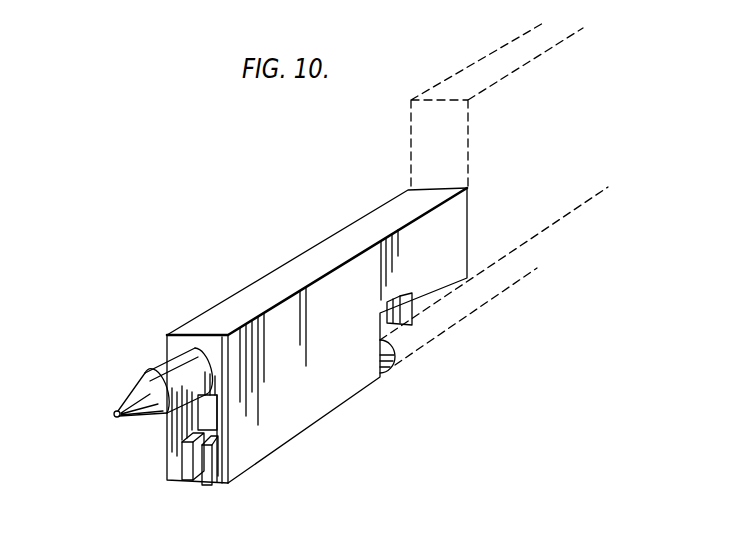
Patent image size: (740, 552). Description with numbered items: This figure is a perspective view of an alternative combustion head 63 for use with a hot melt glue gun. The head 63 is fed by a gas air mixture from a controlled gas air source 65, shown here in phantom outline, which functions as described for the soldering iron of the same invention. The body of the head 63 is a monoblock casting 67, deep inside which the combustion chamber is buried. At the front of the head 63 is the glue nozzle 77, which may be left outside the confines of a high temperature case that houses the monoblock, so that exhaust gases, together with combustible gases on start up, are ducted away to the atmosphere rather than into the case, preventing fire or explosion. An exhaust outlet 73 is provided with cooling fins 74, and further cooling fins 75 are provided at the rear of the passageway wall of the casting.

The head 63 is at (304, 247).
The controlled gas air source 65 is at (502, 291).
The monoblock casting 67 is at (335, 393).
The exhaust outlet 73 is at (207, 408).
The cooling fins 74 is at (204, 475).
The cooling fins 75 is at (421, 292).
The glue nozzle 77 is at (140, 386).